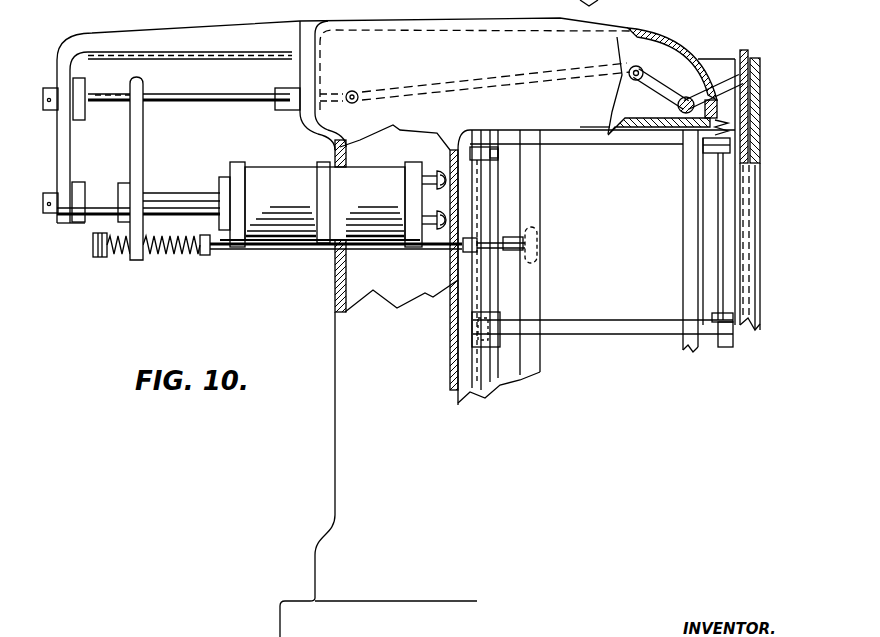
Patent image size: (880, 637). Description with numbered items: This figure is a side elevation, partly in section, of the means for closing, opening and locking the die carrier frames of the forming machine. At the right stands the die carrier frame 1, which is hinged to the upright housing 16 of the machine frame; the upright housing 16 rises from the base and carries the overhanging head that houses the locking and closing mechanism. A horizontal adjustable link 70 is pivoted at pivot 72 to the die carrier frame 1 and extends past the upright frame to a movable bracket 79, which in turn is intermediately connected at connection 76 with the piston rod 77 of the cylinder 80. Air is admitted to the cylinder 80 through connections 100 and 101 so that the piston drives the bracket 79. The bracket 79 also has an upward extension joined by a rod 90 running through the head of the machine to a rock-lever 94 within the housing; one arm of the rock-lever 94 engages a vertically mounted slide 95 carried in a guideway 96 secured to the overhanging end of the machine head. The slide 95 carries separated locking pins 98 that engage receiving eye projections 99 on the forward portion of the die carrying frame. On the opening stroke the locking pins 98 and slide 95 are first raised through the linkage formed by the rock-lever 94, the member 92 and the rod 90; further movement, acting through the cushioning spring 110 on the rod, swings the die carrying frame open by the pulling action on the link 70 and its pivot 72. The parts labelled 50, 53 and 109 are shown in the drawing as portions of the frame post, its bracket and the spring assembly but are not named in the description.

The die carrier frame 1 is at (575, 142).
The upright housing 16 is at (378, 388).
The post 50 is at (496, 290).
The bracket 53 is at (509, 336).
The adjustable link 70 is at (228, 250).
The pivot 72 is at (540, 250).
The intermediate connection 76 is at (126, 188).
The piston rod 77 is at (212, 194).
The movable bracket 79 is at (144, 149).
The cylinder 80 is at (268, 168).
The rod 90 is at (228, 97).
The linkage member 92 is at (468, 84).
The rock-lever 94 is at (660, 87).
The slide 95 is at (748, 50).
The guideway 96 is at (762, 125).
The locking pin 98 is at (733, 338).
The receiving eye projection 99 is at (713, 158).
The air connection 100 is at (447, 171).
The air connection 101 is at (440, 232).
The spring 109 is at (180, 255).
The cushioning spring 110 is at (120, 258).